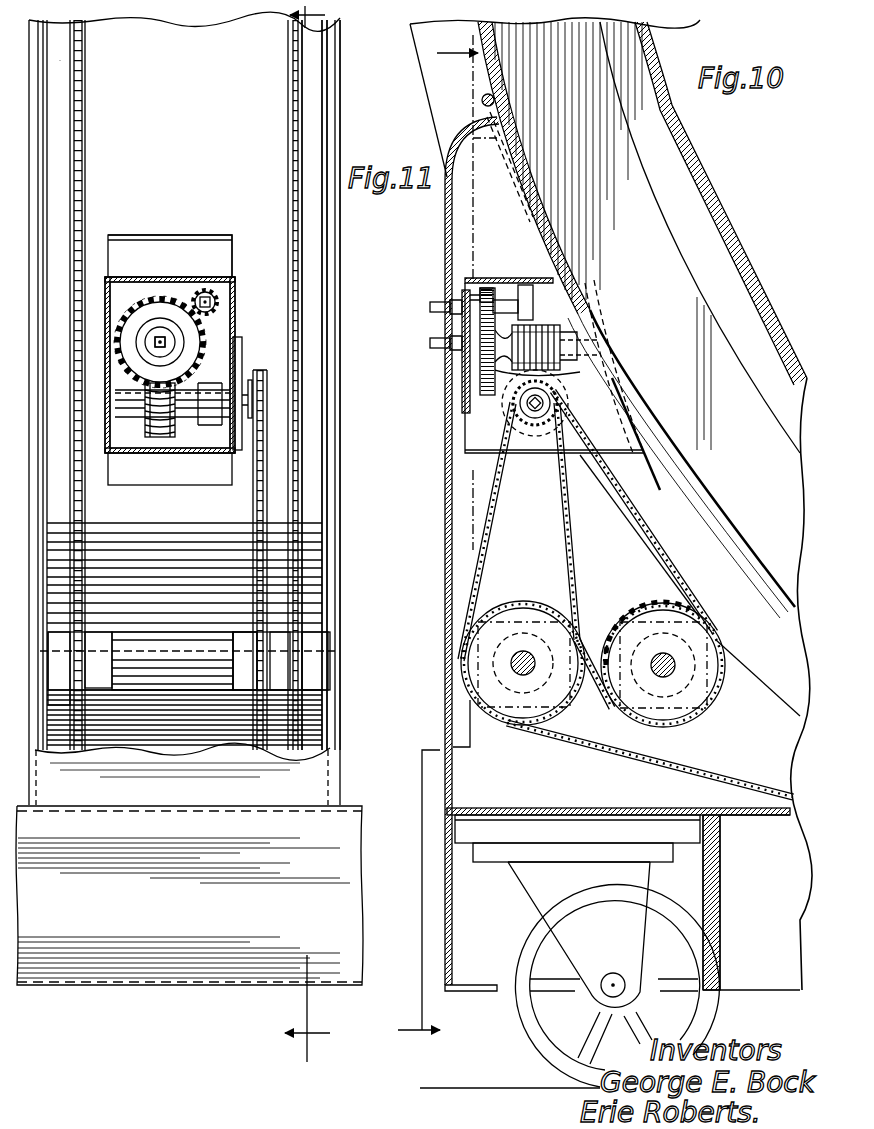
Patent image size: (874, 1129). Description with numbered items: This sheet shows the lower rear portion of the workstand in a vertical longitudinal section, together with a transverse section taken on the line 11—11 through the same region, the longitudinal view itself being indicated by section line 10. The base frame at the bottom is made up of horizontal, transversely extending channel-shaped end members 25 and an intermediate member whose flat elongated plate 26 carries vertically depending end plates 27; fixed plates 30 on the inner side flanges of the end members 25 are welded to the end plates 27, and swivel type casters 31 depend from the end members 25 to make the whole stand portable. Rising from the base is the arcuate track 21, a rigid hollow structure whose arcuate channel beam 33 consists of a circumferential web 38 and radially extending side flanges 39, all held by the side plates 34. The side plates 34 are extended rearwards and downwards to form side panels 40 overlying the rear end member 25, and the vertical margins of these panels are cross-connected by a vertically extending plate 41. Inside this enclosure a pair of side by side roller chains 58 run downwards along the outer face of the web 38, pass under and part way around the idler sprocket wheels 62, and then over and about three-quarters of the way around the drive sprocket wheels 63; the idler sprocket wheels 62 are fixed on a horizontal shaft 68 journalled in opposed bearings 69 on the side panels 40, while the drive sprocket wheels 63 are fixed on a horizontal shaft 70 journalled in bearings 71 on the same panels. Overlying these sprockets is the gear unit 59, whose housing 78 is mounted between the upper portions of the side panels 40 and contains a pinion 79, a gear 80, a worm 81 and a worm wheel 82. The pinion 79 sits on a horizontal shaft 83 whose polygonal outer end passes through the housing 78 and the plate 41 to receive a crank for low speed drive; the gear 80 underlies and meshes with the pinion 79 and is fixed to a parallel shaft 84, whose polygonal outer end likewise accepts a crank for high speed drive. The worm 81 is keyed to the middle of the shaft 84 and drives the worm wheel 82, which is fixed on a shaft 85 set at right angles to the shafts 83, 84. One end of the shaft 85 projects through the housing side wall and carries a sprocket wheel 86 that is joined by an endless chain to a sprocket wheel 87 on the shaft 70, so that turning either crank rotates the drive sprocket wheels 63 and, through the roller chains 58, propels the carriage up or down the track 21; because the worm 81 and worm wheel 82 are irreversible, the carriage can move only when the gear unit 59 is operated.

In FIG. 11, the section line 10- 10 is at (352, 24).
In FIG. 10, the section line 11- 11 is at (468, 49).
In FIG. 11, the arcuate track 21 is at (341, 83).
In FIG. 11, the end members 25 is at (189, 895).
In FIG. 10, the end members 25 is at (479, 808).
In FIG. 10, the plate 26 is at (766, 815).
In FIG. 10, the end plates 27 is at (722, 893).
In FIG. 10, the fixed plates 30 is at (722, 928).
In FIG. 10, the casters 31 is at (543, 890).
In FIG. 11, the arcuate channel beam 33 is at (313, 221).
In FIG. 11, the side plates 34 is at (342, 122).
In FIG. 10, the side plates 34 is at (768, 977).
In FIG. 11, the circumferential web 38 is at (148, 112).
In FIG. 10, the circumferential web 38 is at (611, 504).
In FIG. 11, the side flanges 39 is at (330, 252).
In FIG. 10, the side panels 40 is at (577, 815).
In FIG. 11, the plate 41 is at (298, 765).
In FIG. 10, the plate 41 is at (445, 597).
In FIG. 11, the roller chains 58 is at (300, 283).
In FIG. 10, the roller chains 58 is at (626, 594).
In FIG. 11, the gear unit 59 is at (236, 295).
In FIG. 10, the gear unit 59 is at (477, 418).
In FIG. 10, the idler sprocket wheels 62 is at (677, 708).
In FIG. 11, the drive sprocket wheels 63 is at (300, 657).
In FIG. 10, the drive sprocket wheels 63 is at (528, 724).
In FIG. 10, the shaft 68 is at (668, 660).
In FIG. 10, the bearings 69 is at (722, 647).
In FIG. 11, the shaft 70 is at (137, 657).
In FIG. 10, the shaft 70 is at (522, 660).
In FIG. 11, the bearings 71 is at (332, 700).
In FIG. 10, the bearings 71 is at (570, 612).
In FIG. 11, the housing 78 is at (160, 278).
In FIG. 10, the housing 78 is at (493, 280).
In FIG. 11, the pinion 79 is at (205, 275).
In FIG. 10, the pinion 79 is at (462, 287).
In FIG. 11, the gear 80 is at (133, 300).
In FIG. 10, the gear 80 is at (485, 360).
In FIG. 10, the worm 81 is at (553, 330).
In FIG. 11, the worm wheel 82 is at (156, 437).
In FIG. 10, the worm wheel 82 is at (580, 375).
In FIG. 11, the shaft 83 is at (218, 306).
In FIG. 10, the shaft 83 is at (530, 285).
In FIG. 11, the shaft 84 is at (162, 338).
In FIG. 10, the shaft 84 is at (430, 340).
In FIG. 11, the shaft 85 is at (243, 352).
In FIG. 11, the sprocket wheel 86 is at (262, 408).
In FIG. 10, the sprocket wheel 86 is at (535, 425).
In FIG. 11, the sprocket wheel 87 is at (258, 640).